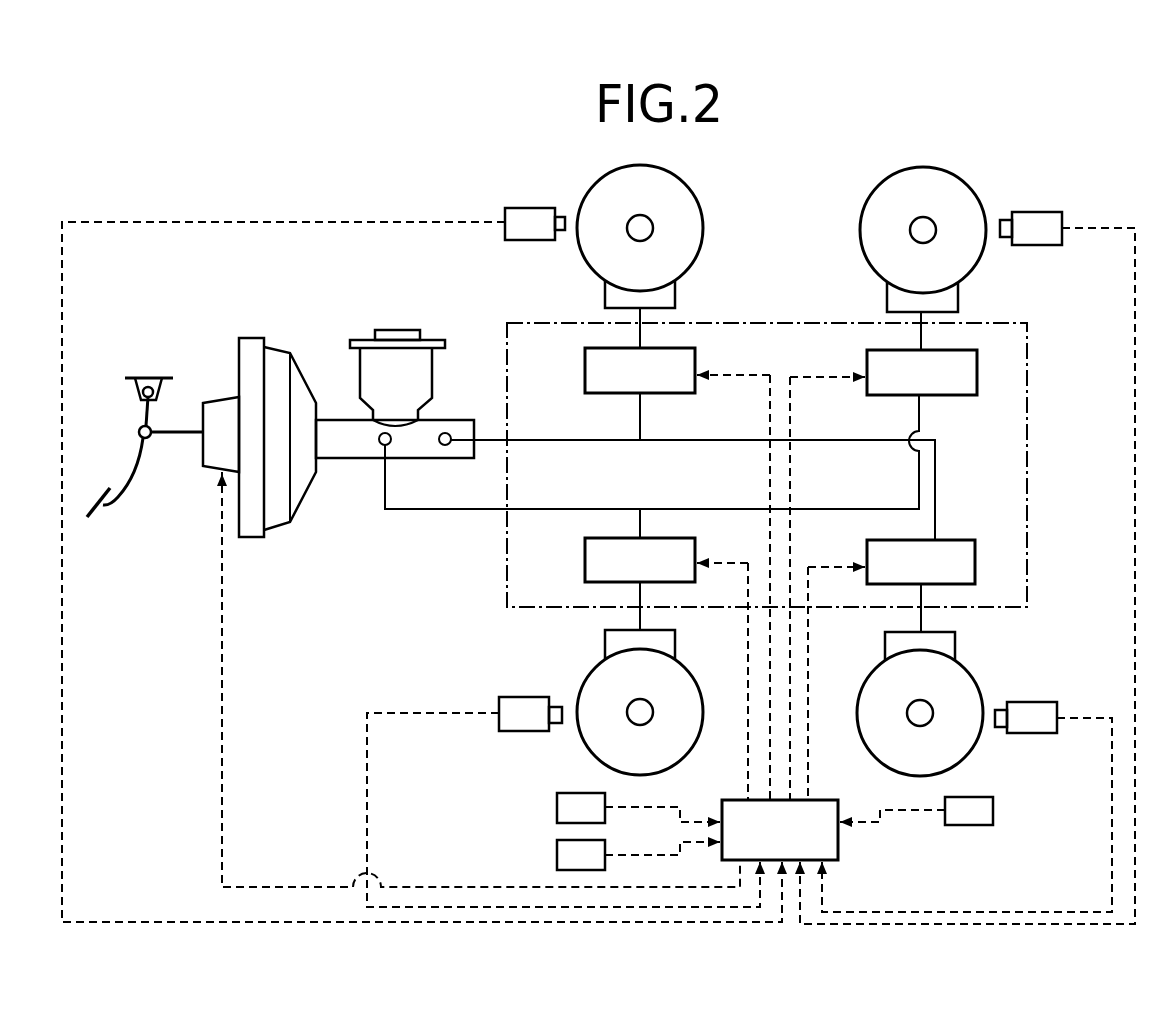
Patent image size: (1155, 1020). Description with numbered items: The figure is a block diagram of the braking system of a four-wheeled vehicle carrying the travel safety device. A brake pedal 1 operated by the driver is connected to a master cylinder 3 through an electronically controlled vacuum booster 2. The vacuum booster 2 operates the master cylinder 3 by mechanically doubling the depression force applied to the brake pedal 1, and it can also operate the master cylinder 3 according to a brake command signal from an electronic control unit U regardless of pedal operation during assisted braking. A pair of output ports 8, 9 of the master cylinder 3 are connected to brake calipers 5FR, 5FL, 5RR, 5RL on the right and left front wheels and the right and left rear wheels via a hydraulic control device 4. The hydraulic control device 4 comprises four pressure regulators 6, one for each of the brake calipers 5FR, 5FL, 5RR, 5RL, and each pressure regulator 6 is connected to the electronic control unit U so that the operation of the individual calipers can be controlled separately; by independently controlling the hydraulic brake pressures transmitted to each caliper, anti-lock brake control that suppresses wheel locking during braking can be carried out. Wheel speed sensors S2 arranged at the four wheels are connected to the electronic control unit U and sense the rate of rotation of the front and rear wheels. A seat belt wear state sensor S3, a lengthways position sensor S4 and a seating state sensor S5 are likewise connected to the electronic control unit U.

The brake pedal 1 is at (112, 490).
The electronically controlled vacuum booster 2 is at (275, 355).
The master cylinder 3 is at (455, 420).
The hydraulic control device 4 is at (1030, 431).
The brake caliper 5FR is at (663, 297).
The brake caliper 5RR is at (948, 300).
The brake caliper 5FL is at (658, 643).
The brake caliper 5RL is at (933, 643).
The pressure regulator 6 is at (631, 386).
The output port 8 is at (446, 445).
The output port 9 is at (380, 443).
The wheel speed sensor S2 is at (527, 218).
The seat belt wear state sensor S3 is at (563, 810).
The lengthways position sensor S4 is at (563, 858).
The seating state sensor S5 is at (978, 810).
The electronic control unit U is at (769, 847).